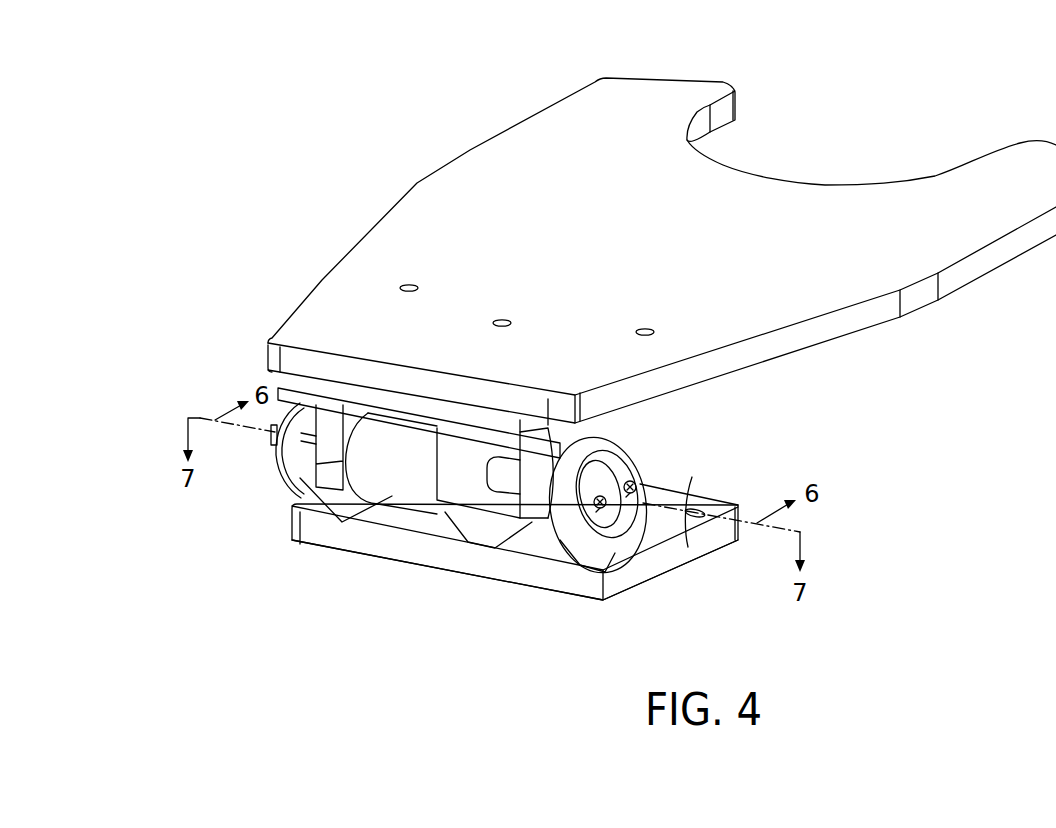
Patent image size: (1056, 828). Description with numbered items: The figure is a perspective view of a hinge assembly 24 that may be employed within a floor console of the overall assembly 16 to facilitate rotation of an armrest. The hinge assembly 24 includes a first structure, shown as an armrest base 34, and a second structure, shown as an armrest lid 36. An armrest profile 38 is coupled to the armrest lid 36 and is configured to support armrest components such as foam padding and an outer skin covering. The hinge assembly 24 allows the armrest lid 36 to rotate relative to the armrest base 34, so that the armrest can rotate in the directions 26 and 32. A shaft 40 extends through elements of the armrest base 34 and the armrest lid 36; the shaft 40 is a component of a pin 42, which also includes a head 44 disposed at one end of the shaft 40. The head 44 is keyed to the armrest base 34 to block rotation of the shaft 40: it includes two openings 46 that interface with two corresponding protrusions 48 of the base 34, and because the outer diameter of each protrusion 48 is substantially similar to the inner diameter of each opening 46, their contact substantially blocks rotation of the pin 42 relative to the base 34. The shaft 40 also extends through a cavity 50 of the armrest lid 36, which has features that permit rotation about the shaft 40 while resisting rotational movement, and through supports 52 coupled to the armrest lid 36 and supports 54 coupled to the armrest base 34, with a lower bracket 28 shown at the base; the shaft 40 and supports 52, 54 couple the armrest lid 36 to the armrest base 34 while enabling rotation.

The roller support assembly 16 is at (426, 106).
The hinge assembly 24 is at (240, 476).
The direction 26 is at (713, 545).
The lower bracket 28 is at (650, 505).
The direction 32 is at (714, 473).
The armrest base 34 is at (680, 558).
The armrest lid 36 is at (298, 385).
The armrest profile 38 is at (546, 108).
The shaft 40 is at (500, 470).
The pin 42 is at (494, 508).
The head 44 is at (598, 496).
The openings 46 is at (636, 495).
The protrusions 48 is at (630, 481).
The cavity 50 is at (395, 476).
The supports 52 is at (418, 448).
The supports 54 is at (453, 466).